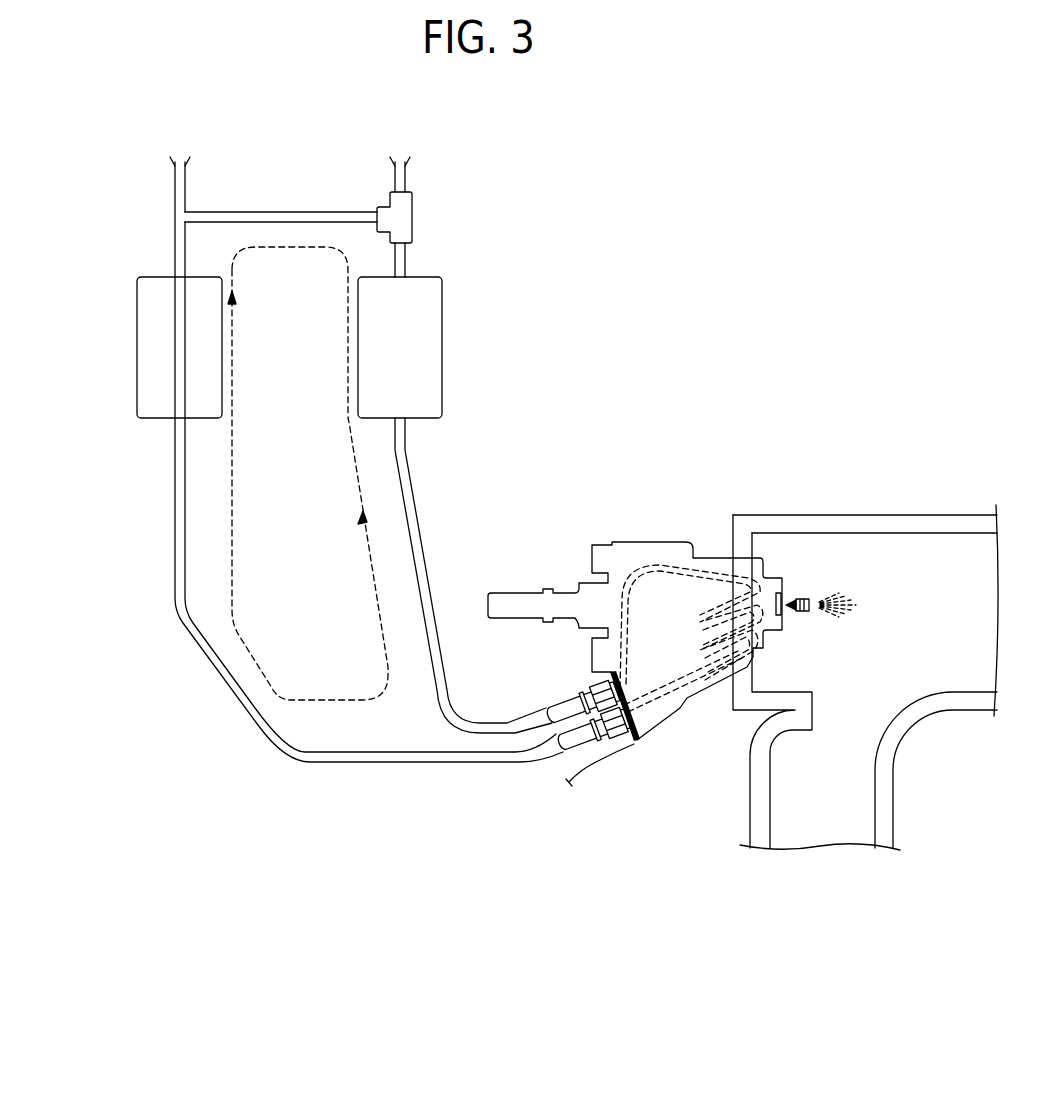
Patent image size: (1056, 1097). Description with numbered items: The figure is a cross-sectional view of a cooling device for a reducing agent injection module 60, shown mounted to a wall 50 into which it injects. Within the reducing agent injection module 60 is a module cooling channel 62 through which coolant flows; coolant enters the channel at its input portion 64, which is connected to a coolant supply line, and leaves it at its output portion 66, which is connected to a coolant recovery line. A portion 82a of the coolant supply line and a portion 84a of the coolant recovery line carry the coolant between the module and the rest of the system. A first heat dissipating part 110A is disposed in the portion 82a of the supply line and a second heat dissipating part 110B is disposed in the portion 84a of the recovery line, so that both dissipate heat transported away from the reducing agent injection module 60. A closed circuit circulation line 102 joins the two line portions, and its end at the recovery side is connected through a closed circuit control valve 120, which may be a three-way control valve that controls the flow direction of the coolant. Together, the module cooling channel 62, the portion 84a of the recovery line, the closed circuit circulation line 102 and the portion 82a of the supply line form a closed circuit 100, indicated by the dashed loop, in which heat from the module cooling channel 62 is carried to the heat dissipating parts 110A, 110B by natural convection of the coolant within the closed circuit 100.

The vehicle body panel 50 is at (883, 763).
The reducing agent injection module 60 is at (648, 532).
The module cooling channel 62 is at (708, 677).
The input portion 64 is at (570, 740).
The output portion 66 is at (563, 705).
The portion of the coolant supply line 82a is at (230, 693).
The portion of the coolant recovery line 84a is at (420, 495).
The closed circuit 100 is at (232, 575).
The closed circuit circulation line 102 is at (288, 218).
The first heat dissipating part 110A is at (152, 342).
The second heat dissipating part 110B is at (432, 342).
The closed circuit control valve 120 is at (402, 214).